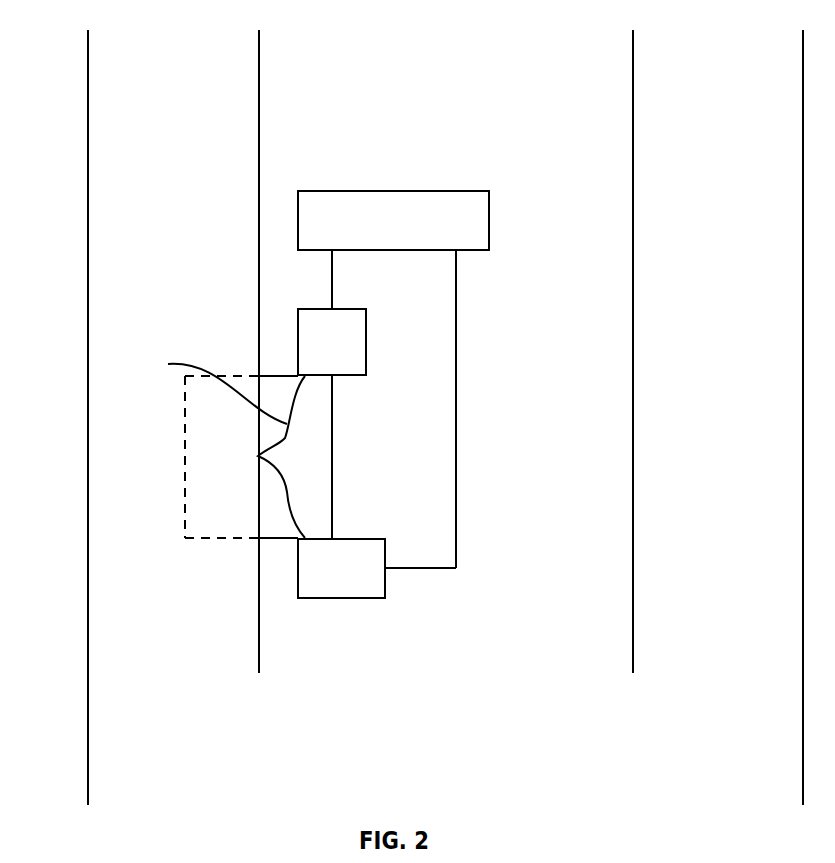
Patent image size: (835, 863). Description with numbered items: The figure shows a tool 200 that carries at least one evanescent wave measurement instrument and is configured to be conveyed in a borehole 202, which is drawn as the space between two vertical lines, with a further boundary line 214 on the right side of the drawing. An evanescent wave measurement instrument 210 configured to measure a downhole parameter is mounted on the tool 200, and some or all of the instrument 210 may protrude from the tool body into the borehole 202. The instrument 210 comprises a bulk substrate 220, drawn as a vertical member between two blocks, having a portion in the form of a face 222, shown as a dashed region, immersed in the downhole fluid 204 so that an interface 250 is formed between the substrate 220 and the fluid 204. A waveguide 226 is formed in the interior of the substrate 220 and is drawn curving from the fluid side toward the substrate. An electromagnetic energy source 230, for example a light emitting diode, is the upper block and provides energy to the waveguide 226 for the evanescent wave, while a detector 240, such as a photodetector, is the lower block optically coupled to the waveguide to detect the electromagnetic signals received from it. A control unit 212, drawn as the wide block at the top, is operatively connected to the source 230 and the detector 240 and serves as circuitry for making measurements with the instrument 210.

The tool 200 is at (192, 115).
The borehole 202 is at (88, 418).
The downhole fluid 204 is at (194, 286).
The evanescent wave measurement instrument 210 is at (509, 307).
The control unit 212 is at (395, 190).
The boundary line 214 is at (633, 350).
The bulk substrate 220 is at (333, 457).
The face 222 is at (256, 518).
The waveguide 226 is at (208, 387).
The electromagnetic energy source 230 is at (366, 342).
The detector 240 is at (341, 600).
The interface 250 is at (258, 455).